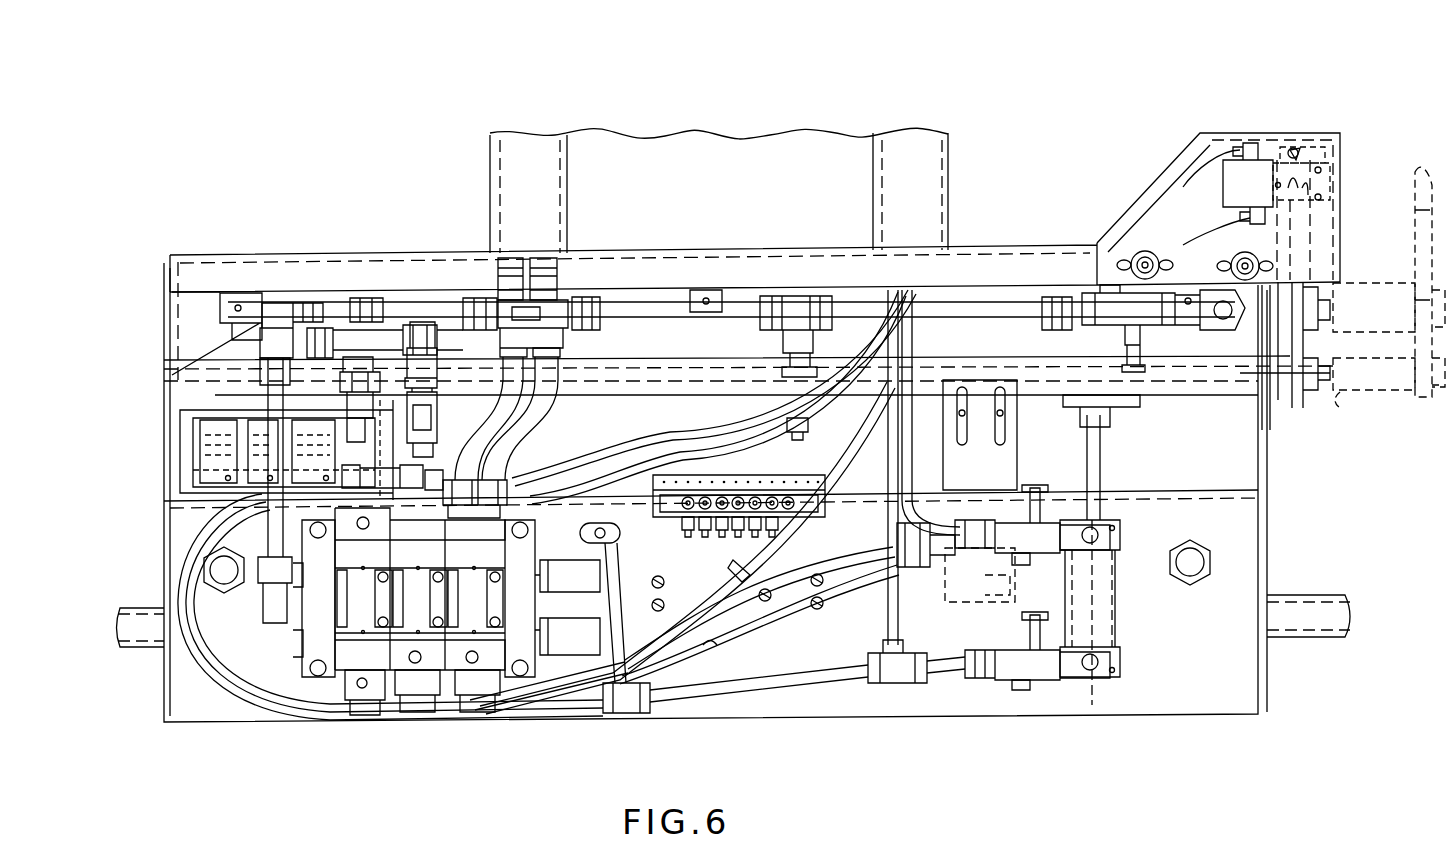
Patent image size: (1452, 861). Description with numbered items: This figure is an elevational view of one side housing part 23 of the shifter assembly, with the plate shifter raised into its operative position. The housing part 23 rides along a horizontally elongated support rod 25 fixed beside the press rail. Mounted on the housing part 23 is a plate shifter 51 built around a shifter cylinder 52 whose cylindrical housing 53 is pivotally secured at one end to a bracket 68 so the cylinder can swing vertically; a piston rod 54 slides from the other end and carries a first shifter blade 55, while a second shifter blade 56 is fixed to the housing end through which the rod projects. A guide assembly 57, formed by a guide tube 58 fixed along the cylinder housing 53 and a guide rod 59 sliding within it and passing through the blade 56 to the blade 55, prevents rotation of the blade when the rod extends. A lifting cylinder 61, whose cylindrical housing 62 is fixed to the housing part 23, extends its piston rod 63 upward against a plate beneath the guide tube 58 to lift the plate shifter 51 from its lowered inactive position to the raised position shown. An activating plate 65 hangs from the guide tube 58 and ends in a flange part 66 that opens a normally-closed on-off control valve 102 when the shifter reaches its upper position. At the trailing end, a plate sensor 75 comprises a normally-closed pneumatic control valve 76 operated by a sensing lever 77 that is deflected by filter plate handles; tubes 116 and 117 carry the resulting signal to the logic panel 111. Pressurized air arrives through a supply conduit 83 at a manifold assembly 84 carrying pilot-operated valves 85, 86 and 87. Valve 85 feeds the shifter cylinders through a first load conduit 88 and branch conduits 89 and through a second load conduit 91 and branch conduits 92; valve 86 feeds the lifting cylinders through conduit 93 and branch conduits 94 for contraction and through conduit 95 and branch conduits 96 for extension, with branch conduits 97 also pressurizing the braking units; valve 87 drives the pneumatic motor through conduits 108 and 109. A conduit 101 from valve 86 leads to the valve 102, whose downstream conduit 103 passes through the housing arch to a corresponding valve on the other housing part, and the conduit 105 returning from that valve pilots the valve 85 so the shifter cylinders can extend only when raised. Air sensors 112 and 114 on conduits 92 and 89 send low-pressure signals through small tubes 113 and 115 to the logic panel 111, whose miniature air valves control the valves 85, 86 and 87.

The housing part 23 is at (340, 248).
The support rod 25 is at (1306, 622).
The plate shifter 51 is at (1065, 223).
The shifter cylinder 52 is at (982, 290).
The cylinder housing 53 is at (1020, 290).
The piston rod 54 is at (1380, 287).
The first shifter blade 55 is at (1415, 210).
The second shifter blade 56 is at (1283, 350).
The guide assembly 57 is at (1160, 400).
The guide tube 58 is at (1232, 387).
The guide rod 59 is at (1367, 375).
The lifting cylinder 61 is at (1122, 605).
The cylindrical housing 62 is at (1110, 630).
The piston rod 63 is at (1093, 467).
The activating plate 65 is at (1010, 460).
The flange part 66 is at (985, 606).
The bracket 68 is at (193, 330).
The plate sensor 75 is at (1283, 137).
The pneumatic control valve 76 is at (1223, 190).
The sensing lever 77 is at (1298, 147).
The supply conduit 83 is at (270, 527).
The manifold assembly 84 is at (310, 650).
The valve 85 is at (487, 660).
The valve 86 is at (432, 665).
The valve 87 is at (365, 648).
The first load conduit 88 is at (483, 420).
The branch conduits 89 is at (507, 263).
The second load conduit 91 is at (520, 414).
The branch conduits 92 is at (553, 262).
The conduit 93 is at (850, 547).
The branch conduits 94 is at (905, 480).
The conduit 95 is at (769, 688).
The branch conduits 96 is at (893, 622).
The branch conduits 97 is at (616, 550).
The conduit 101 is at (790, 602).
The on-off control valve 102 is at (958, 582).
The conduit 103 is at (907, 387).
The conduit 105 is at (838, 475).
The conduit 108 is at (697, 430).
The conduit 109 is at (628, 445).
The logic panel 111 is at (178, 433).
The first air sensor 112 is at (808, 422).
The small tube 113 is at (770, 448).
The air sensor 114 is at (330, 335).
The small tube 115 is at (360, 355).
The tube 116 is at (1188, 246).
The tube 117 is at (1180, 185).